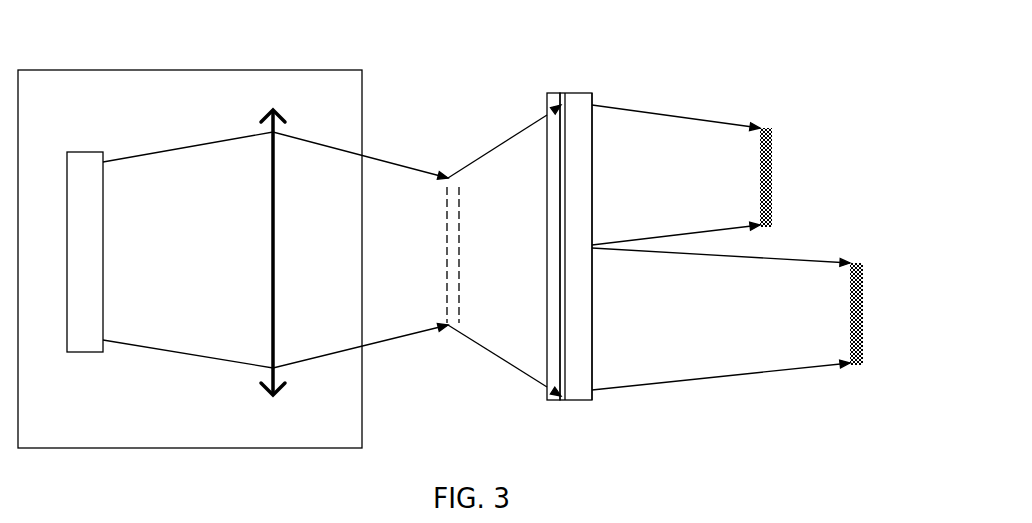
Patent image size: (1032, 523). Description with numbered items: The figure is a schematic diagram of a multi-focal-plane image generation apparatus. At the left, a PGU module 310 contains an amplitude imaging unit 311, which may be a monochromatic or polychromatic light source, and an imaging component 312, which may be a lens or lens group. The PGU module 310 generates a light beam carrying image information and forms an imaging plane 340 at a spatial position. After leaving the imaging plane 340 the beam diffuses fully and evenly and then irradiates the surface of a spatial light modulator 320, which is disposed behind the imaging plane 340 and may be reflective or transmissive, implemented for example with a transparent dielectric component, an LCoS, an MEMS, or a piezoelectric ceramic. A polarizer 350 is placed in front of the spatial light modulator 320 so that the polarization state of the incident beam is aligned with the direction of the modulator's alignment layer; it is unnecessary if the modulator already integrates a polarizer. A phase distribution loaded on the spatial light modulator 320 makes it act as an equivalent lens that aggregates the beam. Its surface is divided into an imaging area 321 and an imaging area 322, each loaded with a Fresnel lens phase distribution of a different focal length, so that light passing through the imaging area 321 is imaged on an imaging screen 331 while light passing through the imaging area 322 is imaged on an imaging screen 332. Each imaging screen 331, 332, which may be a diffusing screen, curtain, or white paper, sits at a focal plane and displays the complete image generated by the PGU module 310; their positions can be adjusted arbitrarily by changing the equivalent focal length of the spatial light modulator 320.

The PGU module 310 is at (194, 70).
The amplitude imaging unit 311 is at (85, 152).
The imaging component 312 is at (277, 255).
The spatial light modulator 320 is at (578, 93).
The imaging area 321 is at (593, 197).
The imaging area 322 is at (593, 320).
The imaging screen 331 is at (773, 180).
The imaging screen 332 is at (865, 317).
The imaging plane 340 is at (462, 250).
The polarizer 350 is at (547, 93).